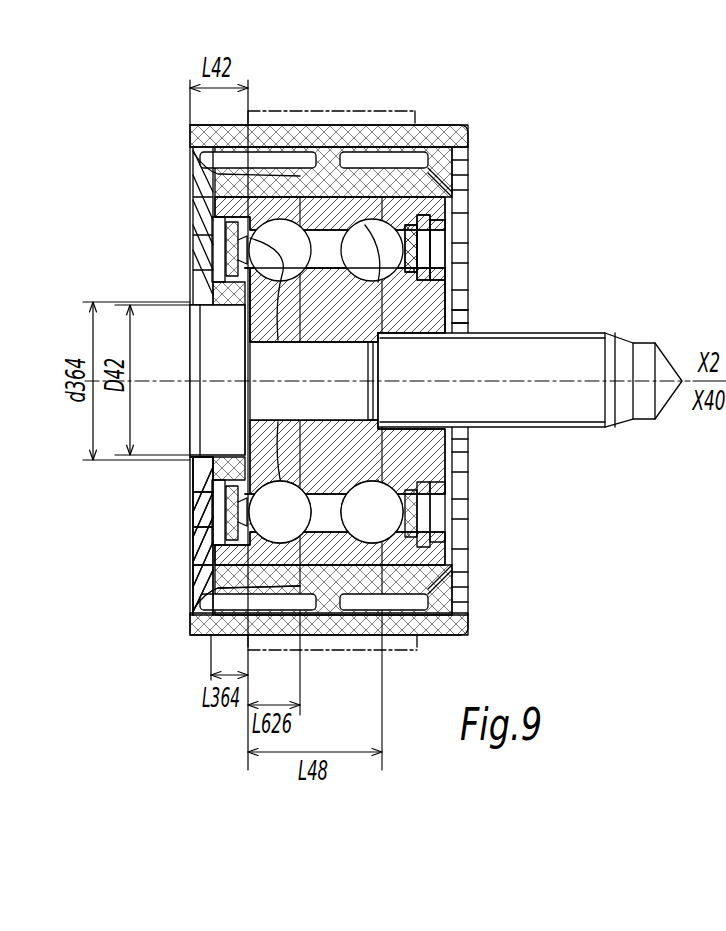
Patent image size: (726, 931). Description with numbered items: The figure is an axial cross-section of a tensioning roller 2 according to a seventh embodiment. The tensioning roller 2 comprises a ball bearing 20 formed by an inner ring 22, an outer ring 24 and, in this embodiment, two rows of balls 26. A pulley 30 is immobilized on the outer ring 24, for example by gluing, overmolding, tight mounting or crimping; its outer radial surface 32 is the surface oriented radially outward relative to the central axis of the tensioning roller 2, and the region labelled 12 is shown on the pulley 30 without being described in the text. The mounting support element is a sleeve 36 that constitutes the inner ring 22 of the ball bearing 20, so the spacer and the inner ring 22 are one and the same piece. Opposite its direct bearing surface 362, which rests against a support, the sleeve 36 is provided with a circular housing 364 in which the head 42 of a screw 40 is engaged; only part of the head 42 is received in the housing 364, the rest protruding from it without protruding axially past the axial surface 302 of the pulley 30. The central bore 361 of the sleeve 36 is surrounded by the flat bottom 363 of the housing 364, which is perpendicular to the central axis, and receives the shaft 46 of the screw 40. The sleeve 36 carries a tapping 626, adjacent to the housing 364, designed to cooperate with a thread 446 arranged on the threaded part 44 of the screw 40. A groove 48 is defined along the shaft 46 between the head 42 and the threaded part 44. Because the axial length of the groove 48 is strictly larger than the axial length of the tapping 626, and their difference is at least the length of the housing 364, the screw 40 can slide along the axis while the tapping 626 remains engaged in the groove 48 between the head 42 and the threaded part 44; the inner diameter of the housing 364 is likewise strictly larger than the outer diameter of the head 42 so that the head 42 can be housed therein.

The tensioning roller 2 is at (487, 150).
The tread 12 is at (326, 110).
The ball bearing 20 is at (442, 505).
The inner ring 22 is at (225, 458).
The outer ring 24 is at (195, 532).
The balls 26 is at (447, 558).
The pulley 30 is at (456, 636).
The outer radial surface 32 is at (452, 124).
The sleeve 36 is at (400, 205).
The screw 40 is at (578, 330).
The head 42 is at (216, 430).
The threaded part 44 is at (492, 380).
The shaft 46 is at (309, 381).
The groove 48 is at (370, 336).
The axial surface 302 is at (188, 626).
The central bore 361 is at (368, 417).
The direct bearing surface 362 is at (458, 320).
The bottom 363 is at (242, 326).
The circular housing 364 is at (210, 300).
The thread 446 is at (588, 429).
The tapping 626 is at (240, 236).